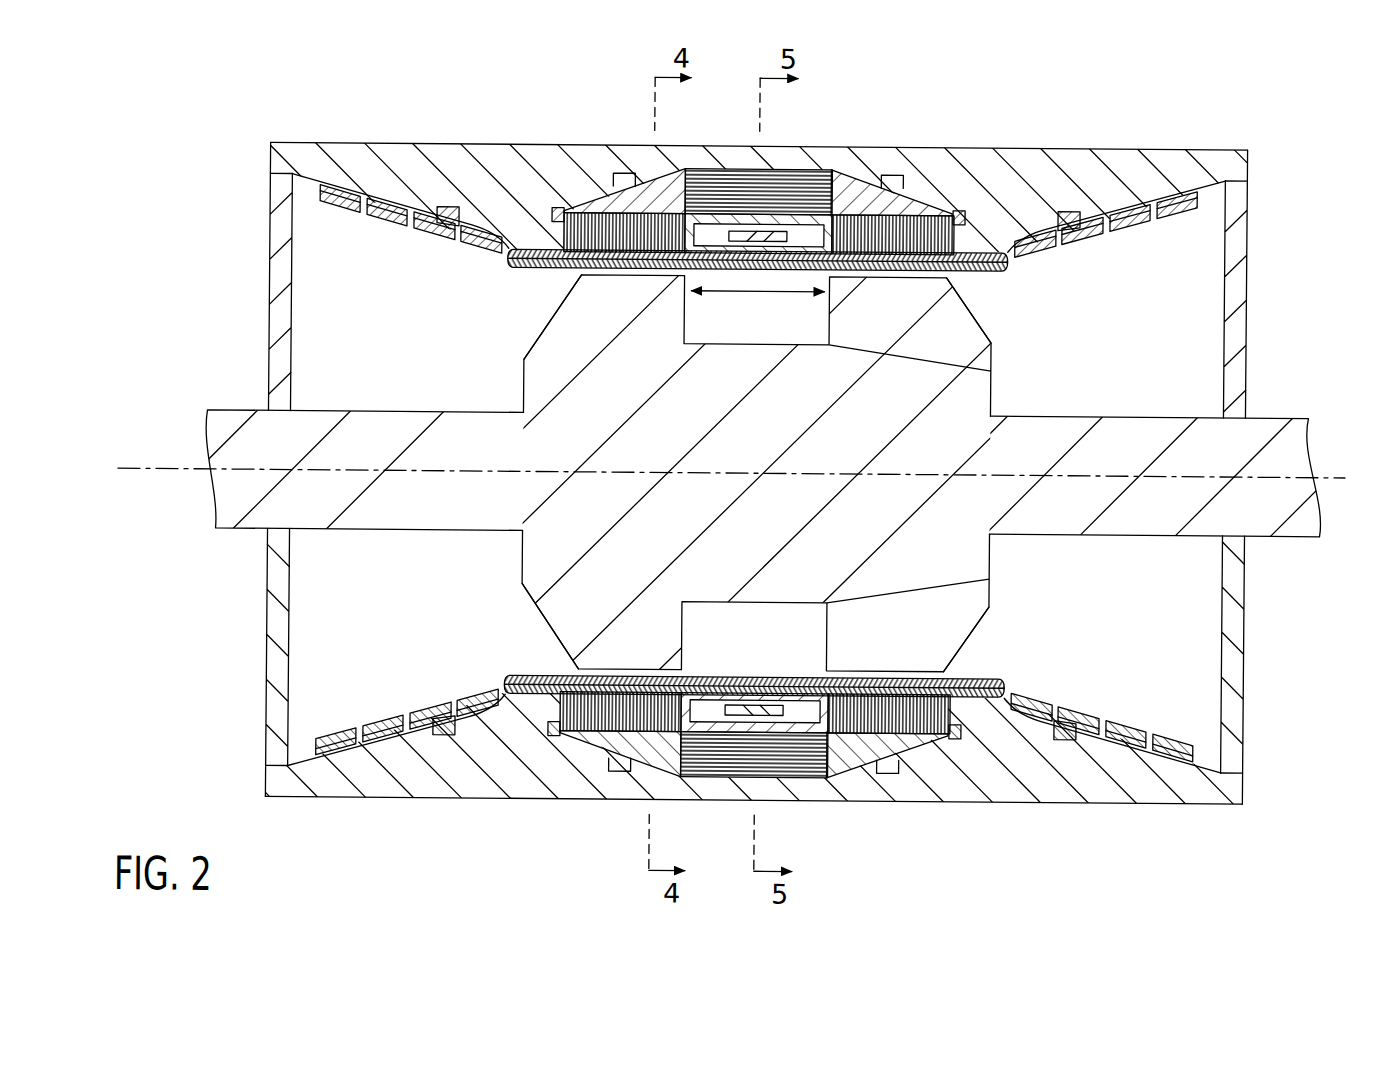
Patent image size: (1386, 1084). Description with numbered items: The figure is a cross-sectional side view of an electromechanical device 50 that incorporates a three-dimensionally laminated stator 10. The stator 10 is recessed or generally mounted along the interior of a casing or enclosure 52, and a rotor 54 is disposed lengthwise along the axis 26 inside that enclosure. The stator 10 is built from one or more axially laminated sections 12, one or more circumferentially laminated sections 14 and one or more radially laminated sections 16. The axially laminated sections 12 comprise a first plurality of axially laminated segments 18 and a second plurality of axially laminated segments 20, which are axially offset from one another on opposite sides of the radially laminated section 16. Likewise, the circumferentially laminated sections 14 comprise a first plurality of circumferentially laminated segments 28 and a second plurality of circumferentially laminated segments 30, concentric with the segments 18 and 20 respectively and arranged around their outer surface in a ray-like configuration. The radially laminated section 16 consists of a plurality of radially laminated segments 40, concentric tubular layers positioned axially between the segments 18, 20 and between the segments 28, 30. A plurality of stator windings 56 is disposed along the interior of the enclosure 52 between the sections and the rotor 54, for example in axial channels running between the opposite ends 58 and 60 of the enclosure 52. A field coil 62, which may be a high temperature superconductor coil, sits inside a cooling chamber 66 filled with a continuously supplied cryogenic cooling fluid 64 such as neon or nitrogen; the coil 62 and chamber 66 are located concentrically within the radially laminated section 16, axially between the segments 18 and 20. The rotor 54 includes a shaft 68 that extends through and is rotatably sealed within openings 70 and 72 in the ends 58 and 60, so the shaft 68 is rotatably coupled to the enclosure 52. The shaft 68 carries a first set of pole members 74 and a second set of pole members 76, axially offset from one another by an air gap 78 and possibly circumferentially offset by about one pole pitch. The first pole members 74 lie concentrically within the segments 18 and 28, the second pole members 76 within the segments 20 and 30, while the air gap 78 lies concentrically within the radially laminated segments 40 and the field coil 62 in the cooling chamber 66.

The three-dimensionally laminated stator 10 is at (755, 473).
The axially laminated sections 12 is at (546, 249).
The circumferentially laminated sections 14 is at (580, 184).
The radially laminated section 16 is at (777, 166).
The first plurality of axially laminated segments 18 is at (506, 248).
The second plurality of axially laminated segments 20 is at (984, 247).
The axis 26 is at (1346, 486).
The first plurality of circumferentially laminated segments 28 is at (547, 226).
The second plurality of circumferentially laminated segments 30 is at (964, 228).
The radially laminated segments 40 is at (809, 166).
The electromechanical device 50 is at (1304, 84).
The casing or enclosure 52 is at (1273, 148).
The rotor 54 is at (716, 472).
The stator windings 56 is at (308, 225).
The first end of enclosure 58 is at (272, 145).
The second end of enclosure 60 is at (1235, 145).
The field coil 62 is at (768, 236).
The cooling fluid 64 is at (745, 230).
The cooling chamber 66 is at (697, 213).
The shaft 68 is at (1304, 531).
The opening in first end 70 is at (268, 406).
The opening in second end 72 is at (1245, 413).
The first set of pole members 74 is at (548, 317).
The second set of pole members 76 is at (970, 317).
The air gap 78 is at (742, 292).